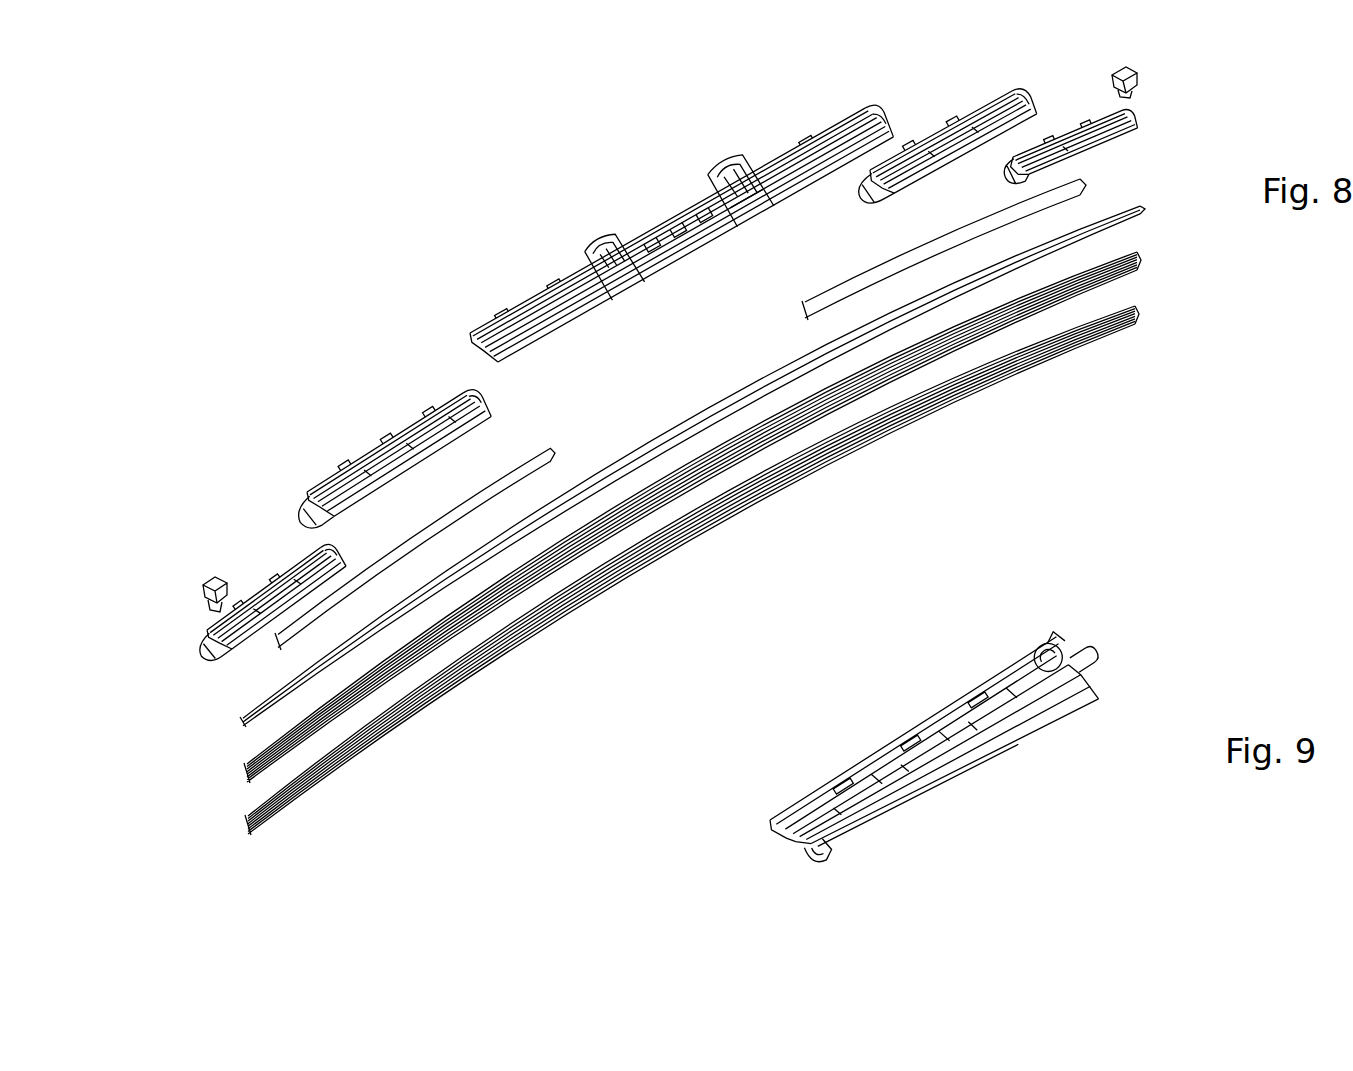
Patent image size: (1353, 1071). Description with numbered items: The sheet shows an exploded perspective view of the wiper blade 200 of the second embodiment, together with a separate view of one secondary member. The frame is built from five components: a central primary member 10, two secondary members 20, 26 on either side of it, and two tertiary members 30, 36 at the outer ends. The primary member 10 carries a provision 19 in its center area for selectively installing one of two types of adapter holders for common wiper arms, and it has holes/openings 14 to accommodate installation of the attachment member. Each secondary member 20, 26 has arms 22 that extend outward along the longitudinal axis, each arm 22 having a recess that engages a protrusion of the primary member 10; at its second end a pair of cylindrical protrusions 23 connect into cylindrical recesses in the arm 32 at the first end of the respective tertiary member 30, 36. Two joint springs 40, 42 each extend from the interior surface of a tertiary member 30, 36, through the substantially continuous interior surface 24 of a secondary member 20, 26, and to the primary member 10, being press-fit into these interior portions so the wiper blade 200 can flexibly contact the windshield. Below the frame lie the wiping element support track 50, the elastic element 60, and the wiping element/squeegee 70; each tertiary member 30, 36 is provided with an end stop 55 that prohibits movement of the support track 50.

In FIG. 8, the wiper blade 200 is at (276, 188).
In FIG. 8, the primary member 10 is at (649, 185).
In FIG. 8, the holes/openings 14 is at (643, 227).
In FIG. 8, the provision 19 is at (692, 200).
In FIG. 8, the secondary member 20 is at (373, 383).
In FIG. 9, the secondary member 20 is at (986, 753).
In FIG. 8, the arm 22 is at (458, 392).
In FIG. 9, the arm 22 is at (1068, 630).
In FIG. 9, the cylindrical protrusion 23 is at (825, 867).
In FIG. 9, the interior surface 24 is at (1003, 757).
In FIG. 8, the secondary member 26 is at (940, 127).
In FIG. 8, the tertiary member 30 is at (253, 535).
In FIG. 8, the arm 32 is at (317, 553).
In FIG. 8, the tertiary member 36 is at (1073, 130).
In FIG. 8, the joint spring 40 is at (267, 655).
In FIG. 8, the joint spring 42 is at (1087, 185).
In FIG. 8, the wiping element support track 50 is at (242, 730).
In FIG. 8, the end stop 55 is at (217, 580).
In FIG. 8, the elastic element 60 is at (245, 780).
In FIG. 8, the wiping element/squeegee 70 is at (252, 833).